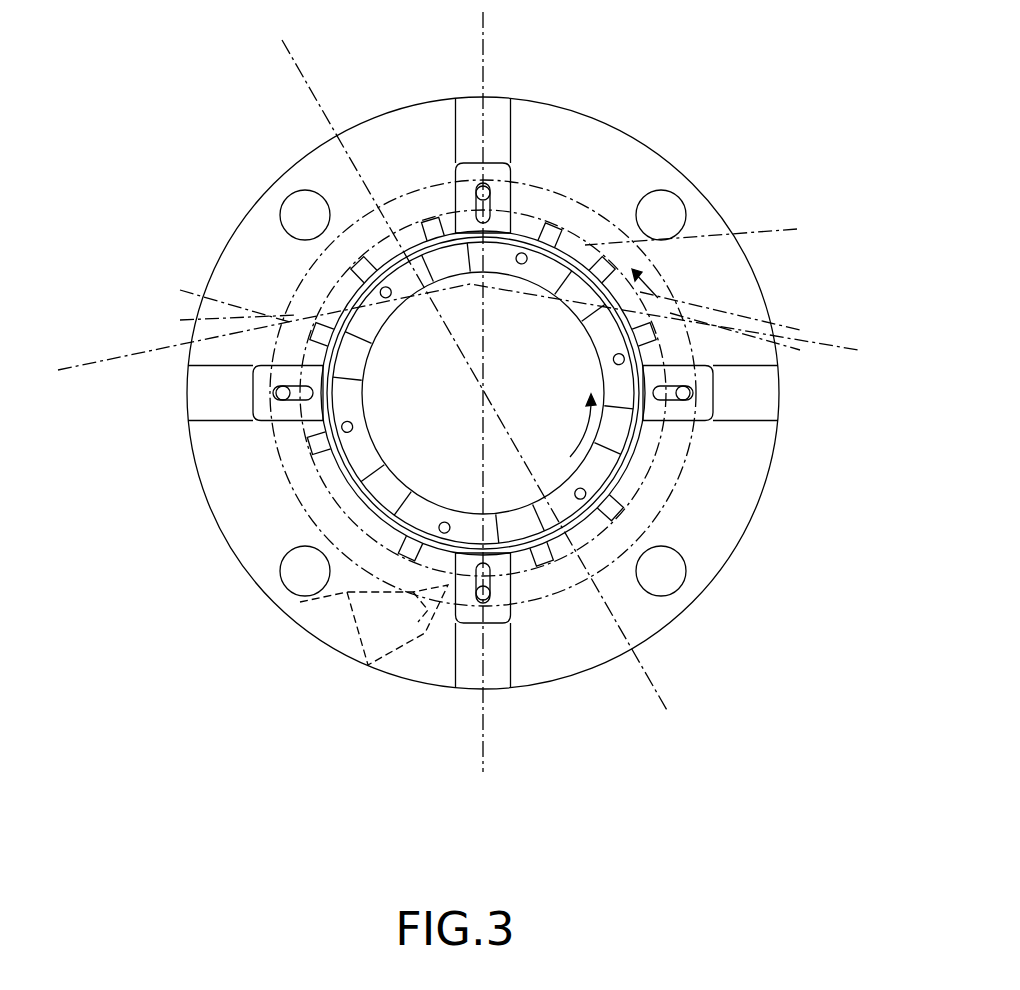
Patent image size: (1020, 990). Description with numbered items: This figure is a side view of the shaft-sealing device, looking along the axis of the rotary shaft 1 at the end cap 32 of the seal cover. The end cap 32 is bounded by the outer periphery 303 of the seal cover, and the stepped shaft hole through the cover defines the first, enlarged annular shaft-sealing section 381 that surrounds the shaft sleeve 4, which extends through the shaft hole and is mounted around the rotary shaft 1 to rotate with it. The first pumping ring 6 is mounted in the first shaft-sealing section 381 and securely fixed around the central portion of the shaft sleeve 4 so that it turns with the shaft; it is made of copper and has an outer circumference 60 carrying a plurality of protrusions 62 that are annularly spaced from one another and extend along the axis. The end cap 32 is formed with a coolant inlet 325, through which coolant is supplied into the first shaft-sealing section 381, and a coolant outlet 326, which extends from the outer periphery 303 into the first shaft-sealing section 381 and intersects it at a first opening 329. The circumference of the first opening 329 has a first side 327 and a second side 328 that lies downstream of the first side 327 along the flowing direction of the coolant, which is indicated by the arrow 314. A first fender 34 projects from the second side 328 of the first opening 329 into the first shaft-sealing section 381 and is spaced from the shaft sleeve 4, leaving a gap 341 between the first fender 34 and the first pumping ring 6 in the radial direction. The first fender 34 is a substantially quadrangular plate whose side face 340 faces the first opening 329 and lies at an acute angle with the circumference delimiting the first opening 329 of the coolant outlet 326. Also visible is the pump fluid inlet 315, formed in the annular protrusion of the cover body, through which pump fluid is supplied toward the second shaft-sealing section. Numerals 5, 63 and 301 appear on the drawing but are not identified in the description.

The rotary shaft 1 is at (507, 492).
The shaft sleeve 4 is at (468, 30).
The section line 5- 5 is at (77, 354).
The pumping ring 6 is at (277, 58).
The end cap 32 is at (610, 137).
The first fender 34 is at (290, 393).
The outer circumference 60 is at (345, 490).
The protrusions 62 is at (550, 235).
The pin holes 63 is at (435, 245).
The side tab 301 is at (690, 432).
The outer periphery 303 is at (668, 165).
The arrow 314 is at (640, 282).
The pump fluid inlet 315 is at (358, 640).
The coolant inlet 325 is at (600, 297).
The coolant outlet 326 is at (305, 325).
The first side 327 is at (300, 330).
The second side 328 is at (300, 333).
The first opening 329 is at (300, 328).
The side face 340 is at (305, 330).
The gap 341 is at (290, 432).
The first shaft-sealing section 381 is at (300, 470).